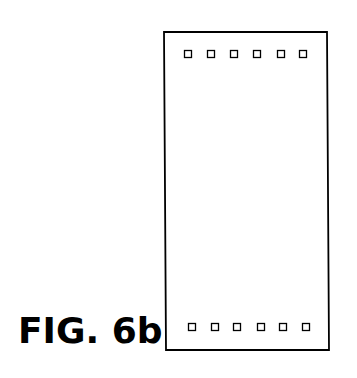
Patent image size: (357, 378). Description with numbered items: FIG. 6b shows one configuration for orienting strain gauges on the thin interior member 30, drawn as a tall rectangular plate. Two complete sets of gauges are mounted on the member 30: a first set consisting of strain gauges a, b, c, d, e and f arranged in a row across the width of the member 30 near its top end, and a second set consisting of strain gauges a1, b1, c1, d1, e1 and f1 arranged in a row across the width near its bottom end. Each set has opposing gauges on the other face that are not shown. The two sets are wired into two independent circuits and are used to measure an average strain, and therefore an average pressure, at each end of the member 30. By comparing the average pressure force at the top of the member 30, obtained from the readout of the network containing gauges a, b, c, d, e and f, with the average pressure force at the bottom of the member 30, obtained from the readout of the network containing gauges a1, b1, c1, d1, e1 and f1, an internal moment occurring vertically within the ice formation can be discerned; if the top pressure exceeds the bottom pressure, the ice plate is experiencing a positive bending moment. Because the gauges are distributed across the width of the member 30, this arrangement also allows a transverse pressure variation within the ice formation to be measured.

The member 30 is at (170, 133).
The strain gauge a is at (184, 53).
The strain gauge b is at (208, 50).
The strain gauge c is at (232, 50).
The strain gauge d is at (255, 50).
The strain gauge e is at (282, 60).
The strain gauge f is at (305, 60).
The strain gauge a1 is at (188, 324).
The strain gauge b1 is at (212, 322).
The strain gauge c1 is at (236, 322).
The strain gauge d1 is at (261, 322).
The strain gauge e1 is at (283, 322).
The strain gauge f1 is at (306, 322).